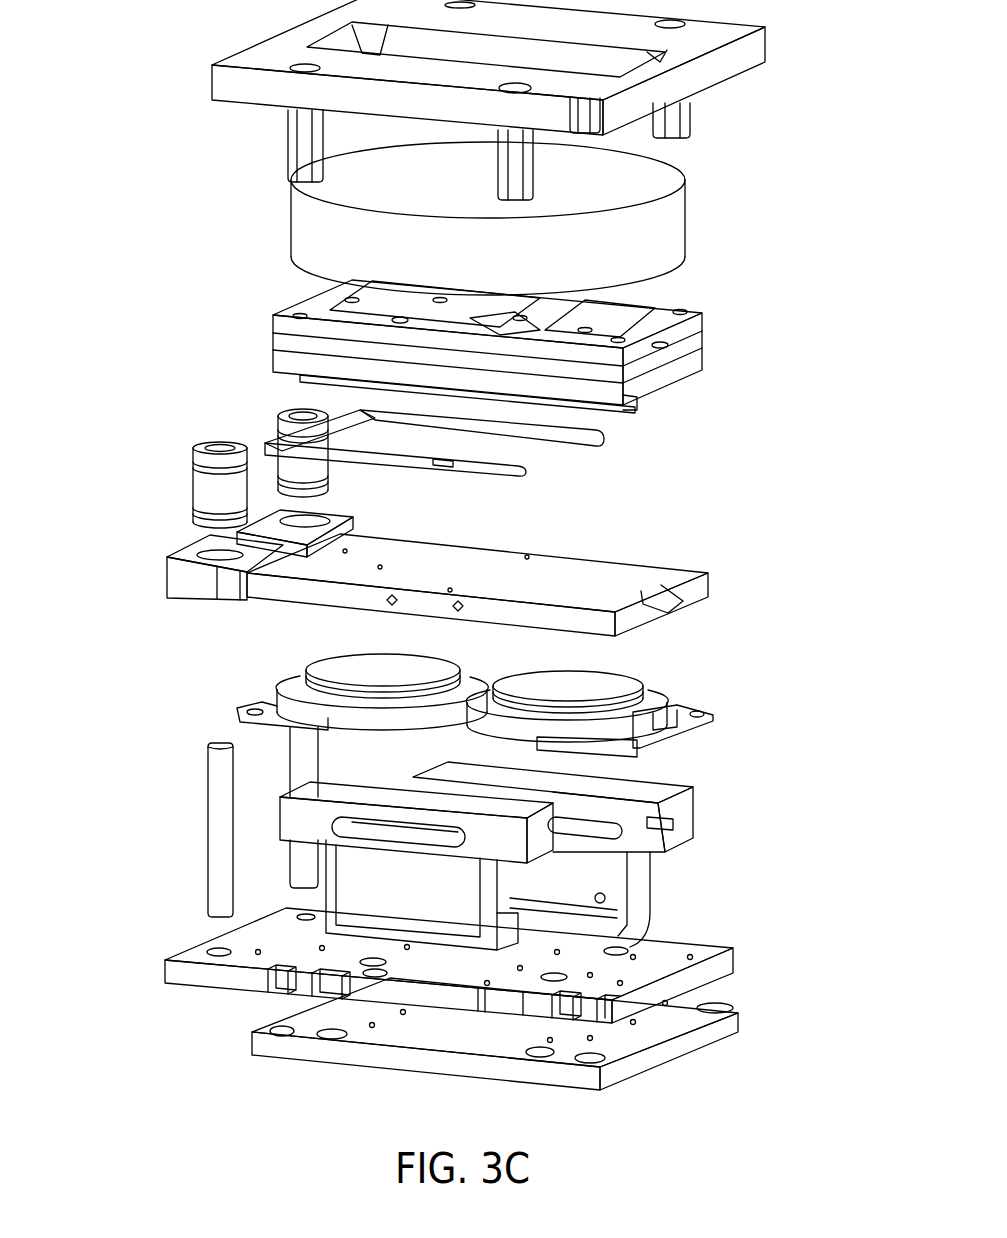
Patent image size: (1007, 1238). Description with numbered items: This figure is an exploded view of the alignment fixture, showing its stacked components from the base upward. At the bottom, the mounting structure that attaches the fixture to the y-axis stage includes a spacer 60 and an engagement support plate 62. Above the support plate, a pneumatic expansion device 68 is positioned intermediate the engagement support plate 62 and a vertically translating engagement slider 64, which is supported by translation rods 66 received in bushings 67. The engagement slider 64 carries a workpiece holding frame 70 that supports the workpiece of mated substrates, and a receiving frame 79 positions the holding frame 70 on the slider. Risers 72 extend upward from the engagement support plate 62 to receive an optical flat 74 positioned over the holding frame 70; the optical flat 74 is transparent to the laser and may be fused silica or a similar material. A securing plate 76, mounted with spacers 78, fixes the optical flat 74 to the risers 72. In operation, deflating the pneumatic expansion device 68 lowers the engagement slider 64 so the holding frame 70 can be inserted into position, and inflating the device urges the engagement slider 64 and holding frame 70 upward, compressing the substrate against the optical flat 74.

The spacer 60 is at (693, 1037).
The engagement support plate 62 is at (715, 963).
The engagement slider 64 is at (190, 581).
The translation rods 66 is at (212, 806).
The bushings 67 is at (196, 484).
The pneumatic expansion device 68 is at (340, 662).
The workpiece holding frame 70 is at (680, 352).
The risers 72 is at (640, 873).
The optical flat 74 is at (668, 221).
The securing plate 76 is at (745, 54).
The spacers 78 is at (687, 121).
The receiving frame 79 is at (605, 433).